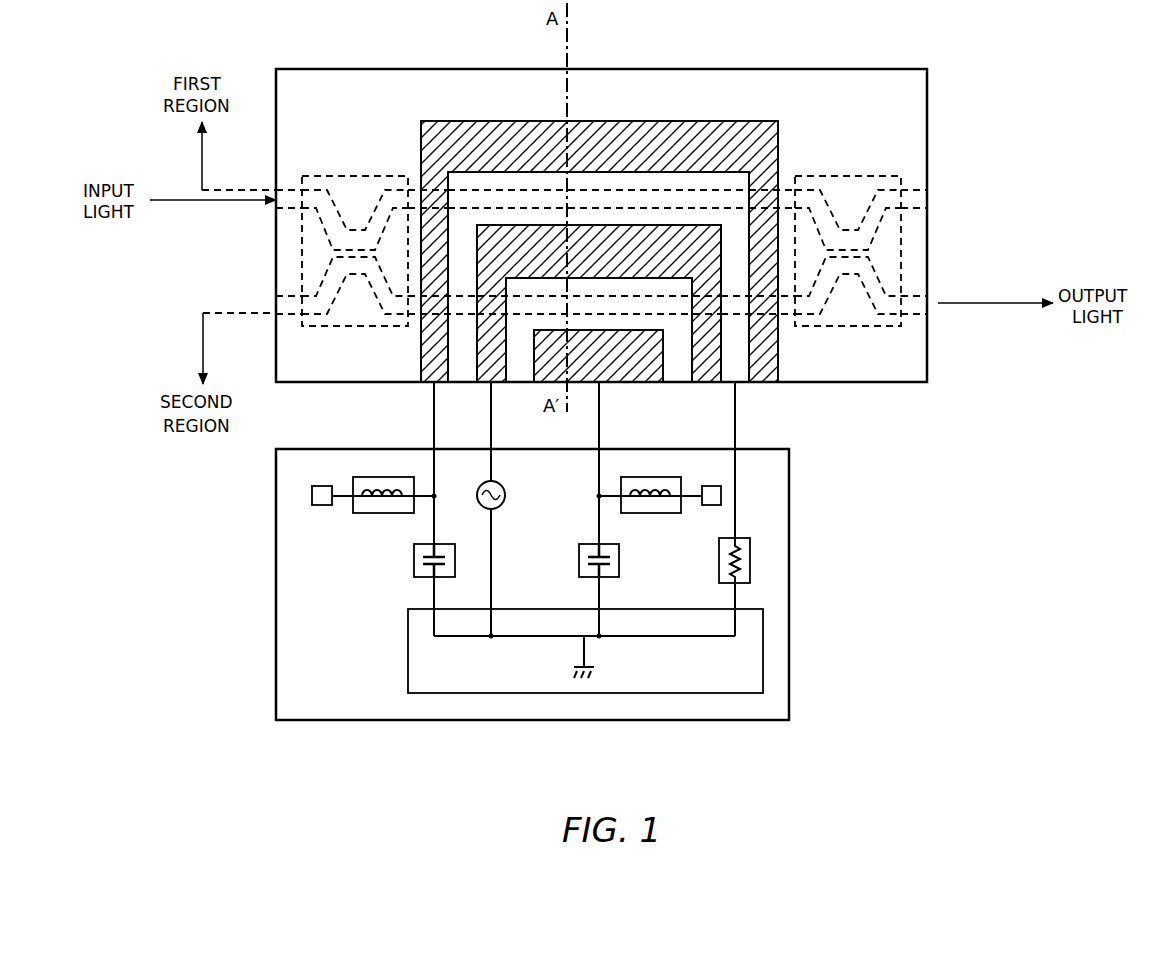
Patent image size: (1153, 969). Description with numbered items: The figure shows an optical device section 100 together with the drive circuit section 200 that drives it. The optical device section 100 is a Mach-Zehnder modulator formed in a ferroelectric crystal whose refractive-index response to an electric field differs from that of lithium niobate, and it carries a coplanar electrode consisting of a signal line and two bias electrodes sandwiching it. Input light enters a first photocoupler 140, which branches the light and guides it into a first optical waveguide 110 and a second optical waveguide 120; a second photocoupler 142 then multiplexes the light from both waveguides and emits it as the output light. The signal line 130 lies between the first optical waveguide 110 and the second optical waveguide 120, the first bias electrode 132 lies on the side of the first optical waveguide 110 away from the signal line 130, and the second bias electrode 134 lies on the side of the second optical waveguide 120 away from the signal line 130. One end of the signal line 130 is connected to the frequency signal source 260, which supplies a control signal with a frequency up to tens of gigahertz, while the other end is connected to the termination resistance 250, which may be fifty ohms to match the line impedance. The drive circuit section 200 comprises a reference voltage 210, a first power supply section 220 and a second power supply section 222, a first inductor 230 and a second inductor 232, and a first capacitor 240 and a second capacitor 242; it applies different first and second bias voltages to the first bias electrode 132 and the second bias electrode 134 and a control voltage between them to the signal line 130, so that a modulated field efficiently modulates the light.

The optical device section 100 is at (417, 68).
The first optical waveguide 110 is at (510, 197).
The second optical waveguide 120 is at (633, 303).
The signal line 130 is at (625, 237).
The first bias electrode 132 is at (738, 138).
The second bias electrode 134 is at (611, 382).
The first photocoupler 140 is at (355, 176).
The second photocoupler 142 is at (848, 176).
The drive circuit section 200 is at (789, 652).
The reference voltage 210 is at (408, 652).
The first power supply section 220 is at (322, 506).
The second power supply section 222 is at (706, 506).
The first inductor 230 is at (384, 514).
The second inductor 232 is at (651, 514).
The first capacitor 240 is at (414, 572).
The second capacitor 242 is at (579, 560).
The termination resistance 250 is at (719, 576).
The frequency signal source 260 is at (505, 492).